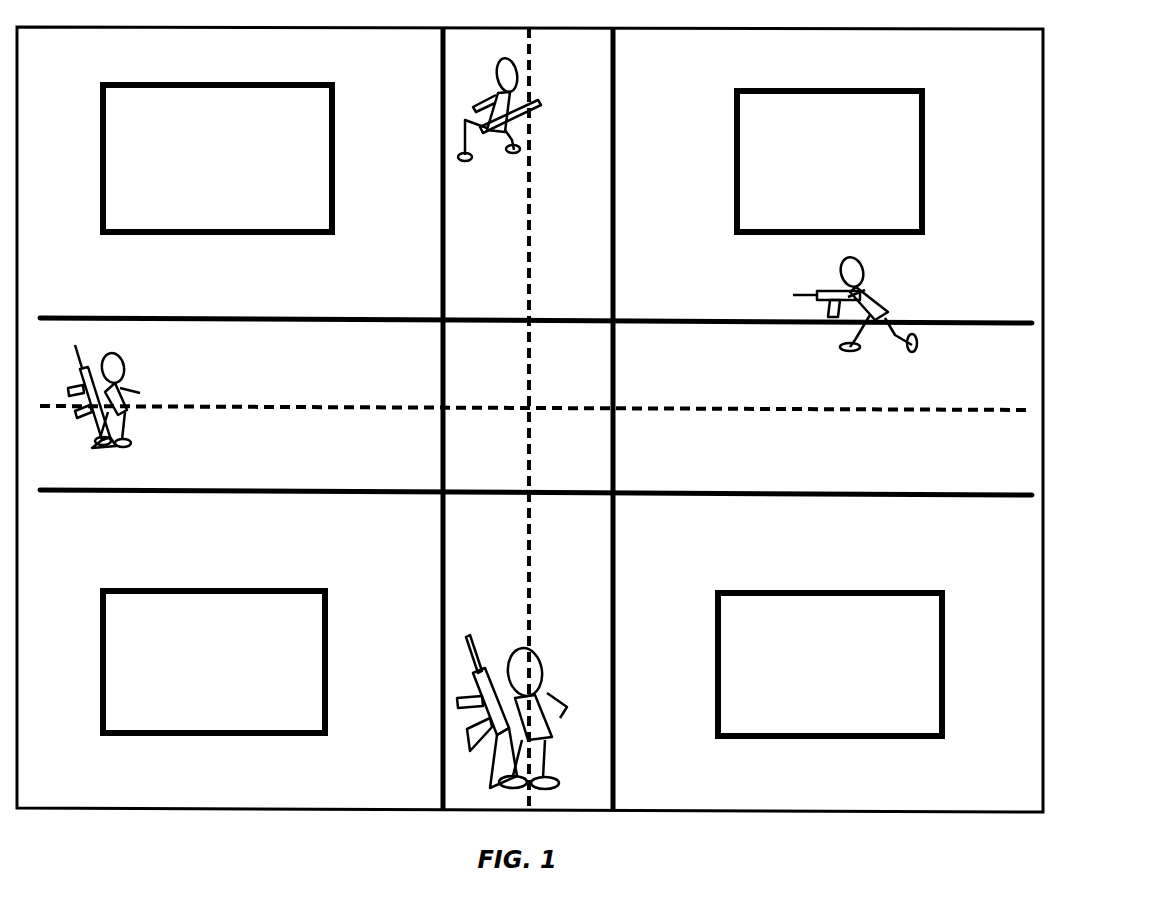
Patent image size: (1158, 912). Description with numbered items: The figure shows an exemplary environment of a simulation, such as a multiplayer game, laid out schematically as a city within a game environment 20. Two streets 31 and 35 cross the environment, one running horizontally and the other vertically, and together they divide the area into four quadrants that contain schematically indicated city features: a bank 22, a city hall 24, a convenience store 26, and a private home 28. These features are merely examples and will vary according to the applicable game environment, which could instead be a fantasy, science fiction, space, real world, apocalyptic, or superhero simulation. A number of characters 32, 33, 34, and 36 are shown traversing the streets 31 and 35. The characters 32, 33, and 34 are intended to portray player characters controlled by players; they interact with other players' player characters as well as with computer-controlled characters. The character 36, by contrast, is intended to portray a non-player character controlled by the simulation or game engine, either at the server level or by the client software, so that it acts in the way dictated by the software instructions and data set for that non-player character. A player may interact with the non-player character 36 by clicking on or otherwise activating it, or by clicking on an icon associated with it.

The game environment 20 is at (576, 419).
The bank 22 is at (334, 160).
The city hall 24 is at (928, 162).
The convenience store 26 is at (330, 662).
The private home 28 is at (948, 667).
The street 31 is at (831, 497).
The character 32 is at (126, 374).
The character 33 is at (495, 92).
The character 34 is at (887, 295).
The street 35 is at (617, 589).
The character 36 is at (515, 655).